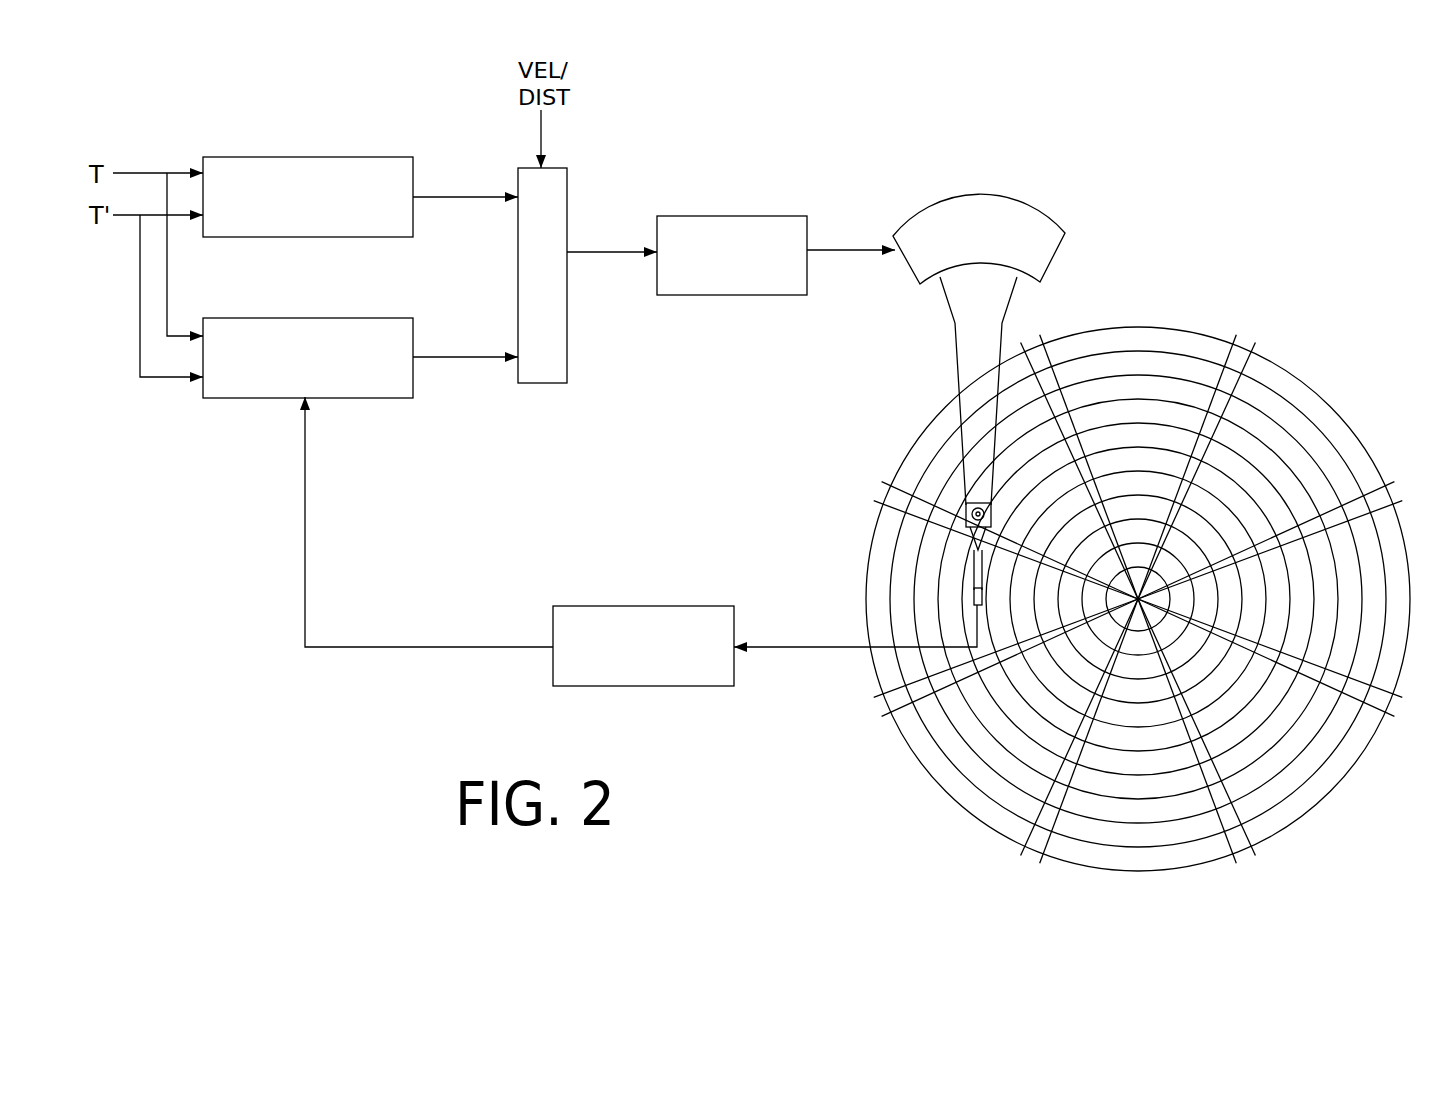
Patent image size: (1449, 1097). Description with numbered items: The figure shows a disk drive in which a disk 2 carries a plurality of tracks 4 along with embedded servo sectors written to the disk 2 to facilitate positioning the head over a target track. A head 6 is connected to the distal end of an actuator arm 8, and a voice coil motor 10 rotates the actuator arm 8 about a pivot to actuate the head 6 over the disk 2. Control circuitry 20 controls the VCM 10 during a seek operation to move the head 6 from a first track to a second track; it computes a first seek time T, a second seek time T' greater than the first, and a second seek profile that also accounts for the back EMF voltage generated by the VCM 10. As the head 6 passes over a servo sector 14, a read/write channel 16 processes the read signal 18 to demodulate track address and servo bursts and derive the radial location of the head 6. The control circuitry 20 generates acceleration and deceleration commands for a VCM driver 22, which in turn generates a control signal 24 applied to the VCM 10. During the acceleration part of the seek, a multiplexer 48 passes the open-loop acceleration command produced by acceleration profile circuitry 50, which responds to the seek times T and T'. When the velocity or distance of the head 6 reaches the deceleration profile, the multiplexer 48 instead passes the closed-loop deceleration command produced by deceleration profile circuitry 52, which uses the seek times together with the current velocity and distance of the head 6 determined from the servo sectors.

The disk 2 is at (1150, 597).
The tracks 4 is at (1140, 359).
The head 6 is at (973, 599).
The actuator arm 8 is at (957, 372).
The voice coil motor 10 is at (912, 277).
The servo sector 14 is at (1150, 609).
The read/write channel 16 is at (646, 606).
The read signal 18 is at (817, 646).
The control circuitry 20 is at (702, 112).
The VCM driver 22 is at (729, 216).
The control signal 24 is at (846, 250).
The multiplexer 48 is at (543, 384).
The acceleration profile circuitry 50 is at (304, 156).
The deceleration profile circuitry 52 is at (301, 316).